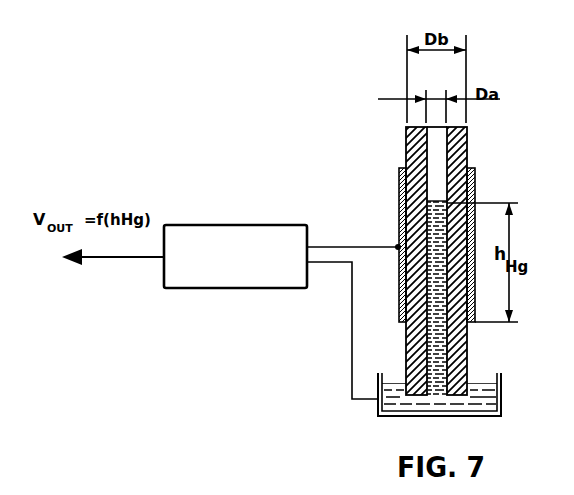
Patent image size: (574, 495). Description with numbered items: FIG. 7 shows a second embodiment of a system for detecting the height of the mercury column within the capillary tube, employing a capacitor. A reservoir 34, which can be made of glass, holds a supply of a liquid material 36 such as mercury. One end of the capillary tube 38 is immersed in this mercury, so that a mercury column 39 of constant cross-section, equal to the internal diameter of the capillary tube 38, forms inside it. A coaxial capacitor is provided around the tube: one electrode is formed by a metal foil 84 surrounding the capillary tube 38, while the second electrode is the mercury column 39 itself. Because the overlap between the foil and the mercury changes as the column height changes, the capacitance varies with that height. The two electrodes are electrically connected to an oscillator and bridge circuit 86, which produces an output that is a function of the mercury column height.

The reservoir 34 is at (501, 385).
The liquid material 36 is at (501, 410).
The capillary tube 38 is at (468, 157).
The mercury column 39 is at (457, 346).
The metal foil 84 is at (400, 186).
The oscillator and bridge circuit 86 is at (231, 225).